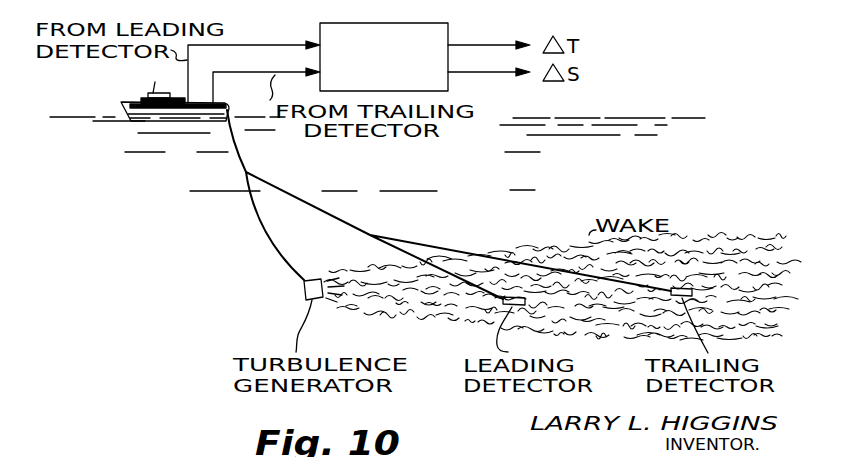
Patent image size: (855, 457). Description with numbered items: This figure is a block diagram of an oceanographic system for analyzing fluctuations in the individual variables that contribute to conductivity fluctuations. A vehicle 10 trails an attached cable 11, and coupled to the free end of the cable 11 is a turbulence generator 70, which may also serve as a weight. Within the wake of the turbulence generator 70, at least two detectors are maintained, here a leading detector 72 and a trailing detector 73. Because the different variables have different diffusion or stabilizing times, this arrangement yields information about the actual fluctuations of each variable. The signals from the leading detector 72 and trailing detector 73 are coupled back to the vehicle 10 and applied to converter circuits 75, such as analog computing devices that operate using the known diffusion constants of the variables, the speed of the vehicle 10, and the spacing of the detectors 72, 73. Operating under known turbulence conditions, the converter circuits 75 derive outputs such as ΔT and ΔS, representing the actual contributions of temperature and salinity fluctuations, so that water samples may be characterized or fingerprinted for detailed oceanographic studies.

The vehicle 10 is at (132, 101).
The cable 11 is at (242, 152).
The turbulence generator 70 is at (303, 283).
The leading detector 72 is at (503, 304).
The trailing detector 73 is at (672, 296).
The converter circuits 75 is at (402, 23).